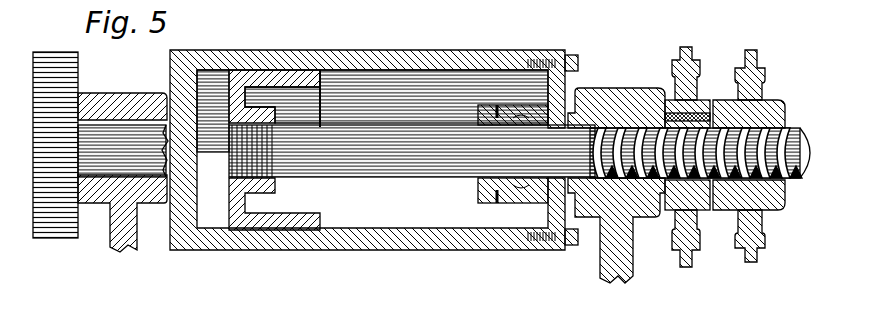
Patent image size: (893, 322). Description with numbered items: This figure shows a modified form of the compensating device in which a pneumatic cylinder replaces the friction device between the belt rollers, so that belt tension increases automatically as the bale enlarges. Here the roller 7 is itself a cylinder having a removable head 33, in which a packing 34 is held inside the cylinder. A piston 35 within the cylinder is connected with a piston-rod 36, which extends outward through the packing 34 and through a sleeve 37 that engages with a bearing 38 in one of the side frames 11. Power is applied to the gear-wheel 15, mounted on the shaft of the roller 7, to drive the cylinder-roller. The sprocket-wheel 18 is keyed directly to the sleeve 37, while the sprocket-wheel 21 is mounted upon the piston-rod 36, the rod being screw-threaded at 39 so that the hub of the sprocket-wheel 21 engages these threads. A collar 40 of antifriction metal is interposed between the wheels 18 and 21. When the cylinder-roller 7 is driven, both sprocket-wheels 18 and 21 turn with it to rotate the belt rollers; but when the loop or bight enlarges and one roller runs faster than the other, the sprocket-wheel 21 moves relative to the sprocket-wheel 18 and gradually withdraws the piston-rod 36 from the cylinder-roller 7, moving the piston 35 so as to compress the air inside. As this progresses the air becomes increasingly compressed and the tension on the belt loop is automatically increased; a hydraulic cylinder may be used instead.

The roller 7 is at (374, 140).
The side frame 11 is at (122, 186).
The gear-wheel 15 is at (79, 68).
The sprocket-wheel 18 is at (674, 71).
The sprocket-wheel 21 is at (766, 85).
The removable head 33 is at (482, 108).
The packing 34 is at (498, 201).
The piston 35 is at (321, 71).
The piston-rod 36 is at (365, 134).
The sleeve 37 is at (588, 120).
The bearing 38 is at (672, 238).
The screw-threads 39 is at (600, 195).
The collar of antifriction metal 40 is at (710, 110).